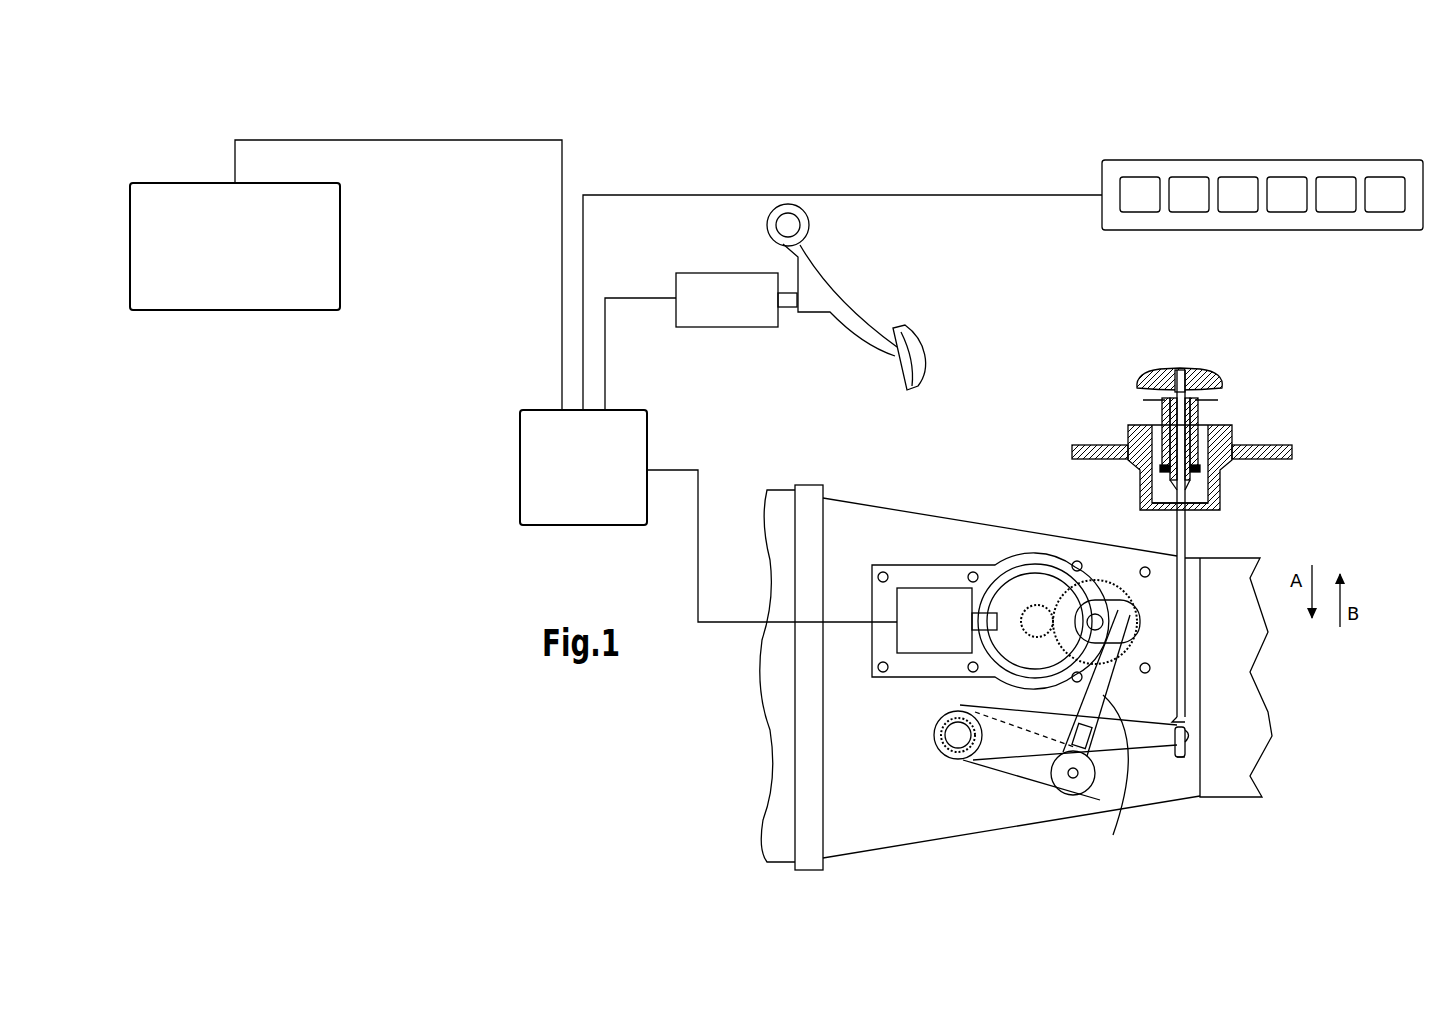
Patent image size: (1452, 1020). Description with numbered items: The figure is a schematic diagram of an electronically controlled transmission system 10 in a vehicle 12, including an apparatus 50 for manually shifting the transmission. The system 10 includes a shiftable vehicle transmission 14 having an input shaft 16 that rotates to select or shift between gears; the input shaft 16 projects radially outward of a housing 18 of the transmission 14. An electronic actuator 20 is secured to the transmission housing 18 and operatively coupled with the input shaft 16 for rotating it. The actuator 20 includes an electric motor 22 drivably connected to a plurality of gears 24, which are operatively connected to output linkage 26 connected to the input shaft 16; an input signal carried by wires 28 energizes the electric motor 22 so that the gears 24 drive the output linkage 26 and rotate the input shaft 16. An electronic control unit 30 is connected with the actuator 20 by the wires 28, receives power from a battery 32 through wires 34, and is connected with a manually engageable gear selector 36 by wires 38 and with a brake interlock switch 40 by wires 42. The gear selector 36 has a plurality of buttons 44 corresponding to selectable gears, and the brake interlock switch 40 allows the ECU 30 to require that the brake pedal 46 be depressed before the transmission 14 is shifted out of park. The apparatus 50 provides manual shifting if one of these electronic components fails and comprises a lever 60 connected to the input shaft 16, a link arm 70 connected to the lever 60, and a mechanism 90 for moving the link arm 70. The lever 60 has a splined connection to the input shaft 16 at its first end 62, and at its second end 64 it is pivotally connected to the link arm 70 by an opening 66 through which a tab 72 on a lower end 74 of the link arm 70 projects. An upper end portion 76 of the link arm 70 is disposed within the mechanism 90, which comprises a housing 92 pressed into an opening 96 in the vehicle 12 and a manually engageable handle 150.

The electronically controlled transmission system 10 is at (708, 128).
The vehicle 12 is at (1277, 445).
The shiftable vehicle transmission 14 is at (870, 497).
The input shaft 16 is at (953, 735).
The housing 18 is at (1010, 807).
The electronic actuator 20 is at (1000, 552).
The electric motor 22 is at (927, 606).
The gears 24 is at (1102, 568).
The output linkage 26 is at (1040, 780).
The wires 28 is at (685, 468).
The electronic control unit 30 is at (538, 497).
The battery 32 is at (235, 290).
The wires 34 is at (393, 135).
The gear selector 36 is at (1195, 168).
The wires 38 is at (878, 195).
The brake interlock switch 40 is at (725, 278).
The wires 42 is at (605, 355).
The buttons 44 is at (1140, 212).
The brake pedal 46 is at (913, 363).
The apparatus for manually shifting the transmission 50 is at (1189, 506).
The lever 60 is at (1149, 760).
The first end 62 is at (963, 762).
The second end 64 is at (1190, 735).
The opening 66 is at (1187, 728).
The link arm 70 is at (1196, 537).
The tab 72 is at (1180, 752).
The lower end 74 is at (1180, 715).
The upper end portion 76 is at (1182, 415).
The mechanism 90 is at (1234, 498).
The housing 92 is at (1133, 425).
The opening 96 is at (1108, 447).
The handle 150 is at (1198, 356).